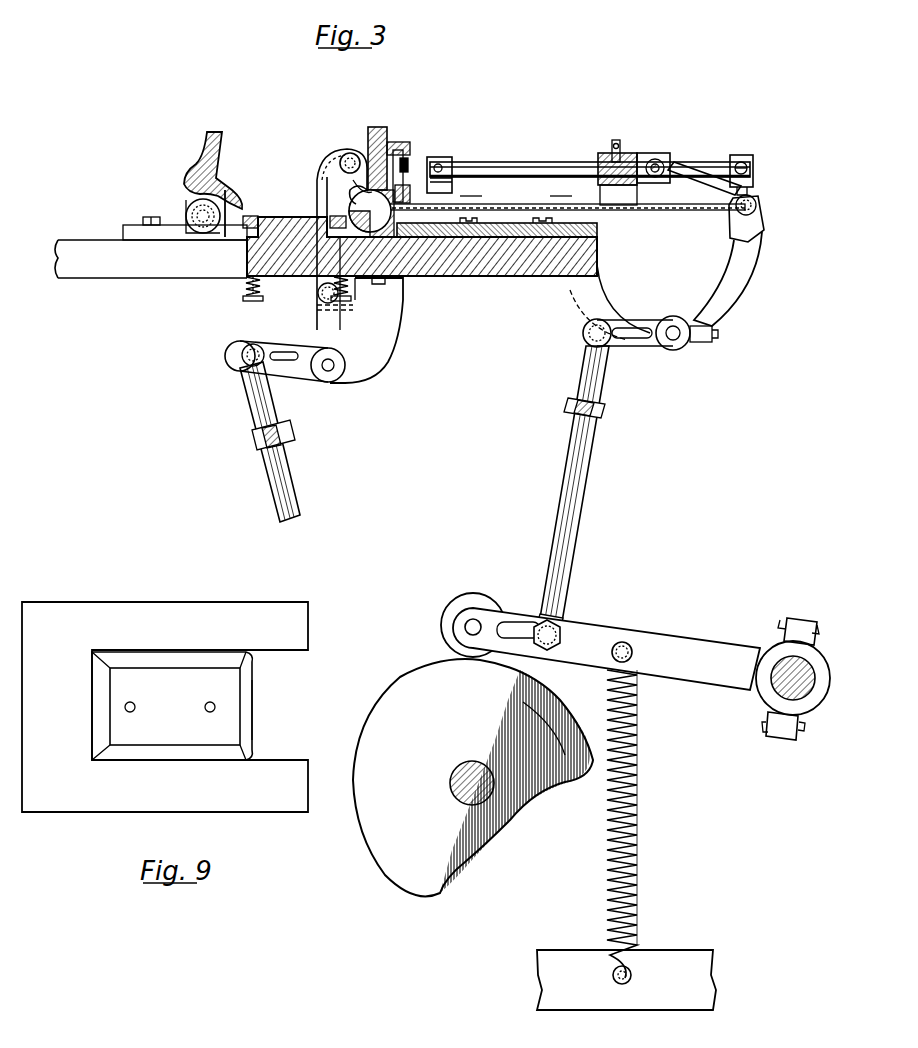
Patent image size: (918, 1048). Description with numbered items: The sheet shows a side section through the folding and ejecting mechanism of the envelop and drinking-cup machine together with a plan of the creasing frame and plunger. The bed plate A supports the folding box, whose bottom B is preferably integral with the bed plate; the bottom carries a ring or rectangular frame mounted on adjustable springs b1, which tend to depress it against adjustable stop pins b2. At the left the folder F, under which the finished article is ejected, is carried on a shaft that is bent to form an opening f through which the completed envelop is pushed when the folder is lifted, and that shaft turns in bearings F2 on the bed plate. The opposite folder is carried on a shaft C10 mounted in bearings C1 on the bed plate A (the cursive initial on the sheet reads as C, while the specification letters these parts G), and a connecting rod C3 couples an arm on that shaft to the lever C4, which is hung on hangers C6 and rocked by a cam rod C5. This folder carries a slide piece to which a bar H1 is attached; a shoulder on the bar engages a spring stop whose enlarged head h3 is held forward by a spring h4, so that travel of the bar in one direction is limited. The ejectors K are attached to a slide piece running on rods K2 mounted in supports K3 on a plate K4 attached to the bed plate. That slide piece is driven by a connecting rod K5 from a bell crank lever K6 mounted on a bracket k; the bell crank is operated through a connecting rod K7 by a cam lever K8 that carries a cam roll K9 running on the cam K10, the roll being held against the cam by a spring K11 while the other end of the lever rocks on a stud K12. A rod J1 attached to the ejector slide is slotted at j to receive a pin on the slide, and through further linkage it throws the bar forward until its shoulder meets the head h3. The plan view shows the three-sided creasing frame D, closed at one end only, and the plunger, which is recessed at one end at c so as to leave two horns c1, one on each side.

In FIG. 3, the bottom of the folding box B is at (280, 217).
In FIG. 3, the adjustable stop pins b2 is at (252, 216).
In FIG. 3, the adjustable springs b1 is at (245, 290).
In FIG. 3, the bed plate A is at (597, 258).
In FIG. 3, the plate K4 is at (515, 223).
In FIG. 3, the ejectors K is at (500, 207).
In FIG. 3, the rods K2 is at (508, 158).
In FIG. 3, the supports K3 is at (517, 186).
In FIG. 3, the spring h4 is at (425, 178).
In FIG. 3, the head h3 is at (402, 160).
In FIG. 3, the bar H1 is at (392, 142).
In FIG. 3, the bearings C1 is at (370, 127).
In FIG. 9, the bearings C1 is at (169, 706).
In FIG. 3, the connecting rod C3 is at (316, 175).
In FIG. 3, the shaft C10 is at (352, 165).
In FIG. 3, the folder F is at (222, 137).
In FIG. 3, the bearings F2 is at (184, 204).
In FIG. 3, the opening f is at (232, 213).
In FIG. 3, the hangers C6 is at (383, 320).
In FIG. 3, the lever C4 is at (305, 380).
In FIG. 3, the cam rod C5 is at (295, 488).
In FIG. 3, the rod J1 is at (632, 153).
In FIG. 3, the slot j is at (616, 140).
In FIG. 3, the connecting rod K5 is at (710, 185).
In FIG. 3, the bell crank lever K6 is at (740, 272).
In FIG. 3, the bracket k is at (610, 300).
In FIG. 3, the connecting rod K7 is at (582, 492).
In FIG. 3, the cam roll K9 is at (485, 594).
In FIG. 3, the cam lever K8 is at (702, 648).
In FIG. 3, the stud K12 is at (800, 700).
In FIG. 3, the cam K10 is at (473, 777).
In FIG. 3, the spring K11 is at (642, 788).
In FIG. 9, the creasing frame D is at (165, 707).
In FIG. 9, the horns c1 is at (252, 662).
In FIG. 9, the recess c is at (243, 712).